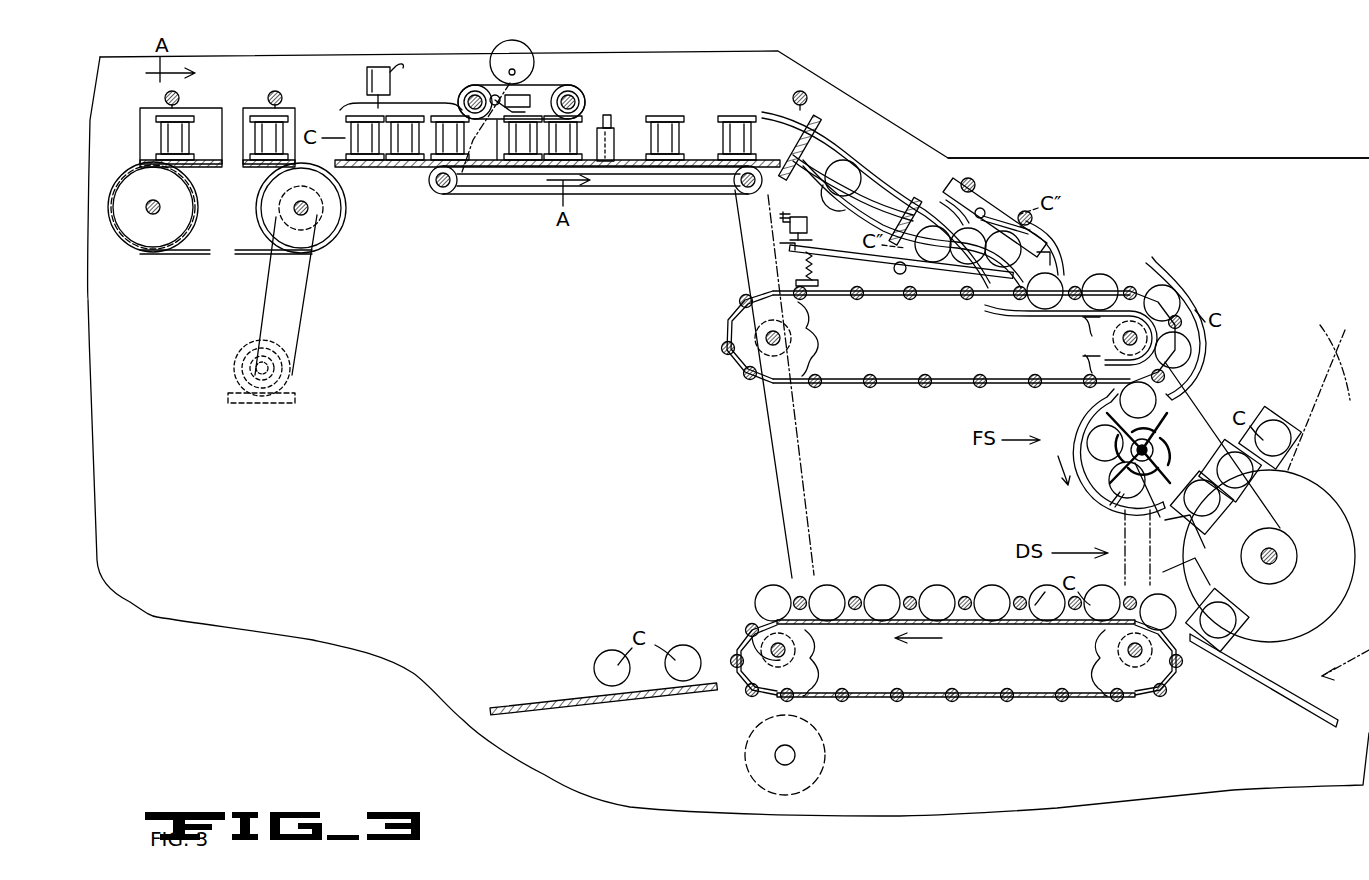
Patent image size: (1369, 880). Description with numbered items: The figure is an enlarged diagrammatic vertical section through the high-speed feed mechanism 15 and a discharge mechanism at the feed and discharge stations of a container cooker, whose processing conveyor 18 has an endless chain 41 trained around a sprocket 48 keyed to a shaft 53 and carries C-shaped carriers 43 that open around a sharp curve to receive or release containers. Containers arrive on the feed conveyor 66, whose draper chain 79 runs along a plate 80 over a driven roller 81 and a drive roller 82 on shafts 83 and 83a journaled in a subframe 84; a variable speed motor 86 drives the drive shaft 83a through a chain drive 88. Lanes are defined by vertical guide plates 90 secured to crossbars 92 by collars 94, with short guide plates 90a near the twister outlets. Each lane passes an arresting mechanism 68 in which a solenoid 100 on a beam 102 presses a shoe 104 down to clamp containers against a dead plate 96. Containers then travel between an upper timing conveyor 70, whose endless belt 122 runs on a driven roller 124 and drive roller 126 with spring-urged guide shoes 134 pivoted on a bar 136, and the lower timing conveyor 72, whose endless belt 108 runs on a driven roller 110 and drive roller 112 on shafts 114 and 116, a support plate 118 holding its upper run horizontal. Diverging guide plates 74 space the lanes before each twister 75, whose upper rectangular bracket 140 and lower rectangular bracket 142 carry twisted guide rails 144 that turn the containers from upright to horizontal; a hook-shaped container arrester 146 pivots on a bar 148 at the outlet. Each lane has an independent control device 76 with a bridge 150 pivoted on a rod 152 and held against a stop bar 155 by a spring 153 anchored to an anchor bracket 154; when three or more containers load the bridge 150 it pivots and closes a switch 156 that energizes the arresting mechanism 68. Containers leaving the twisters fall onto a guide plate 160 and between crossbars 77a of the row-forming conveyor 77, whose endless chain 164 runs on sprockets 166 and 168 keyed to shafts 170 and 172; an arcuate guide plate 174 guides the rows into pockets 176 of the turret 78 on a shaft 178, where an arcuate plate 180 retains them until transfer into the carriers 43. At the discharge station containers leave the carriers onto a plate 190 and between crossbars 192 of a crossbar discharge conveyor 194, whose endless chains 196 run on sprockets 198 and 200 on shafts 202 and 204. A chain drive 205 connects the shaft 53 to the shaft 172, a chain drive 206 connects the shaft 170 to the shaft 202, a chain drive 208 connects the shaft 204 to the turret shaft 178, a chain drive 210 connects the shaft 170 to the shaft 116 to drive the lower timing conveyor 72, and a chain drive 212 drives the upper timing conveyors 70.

The high-speed feed mechanism 15 is at (1182, 165).
The processing conveyor 18 is at (1332, 340).
The endless chain 41 is at (1279, 686).
The carrier bars 43 is at (1252, 483).
The sprocket 48 is at (1350, 595).
The shaft 53 is at (1277, 552).
The feed conveyor 66 is at (120, 162).
The arresting mechanism 68 is at (362, 95).
The upper timing conveyor 70 is at (513, 80).
The lower timing conveyor 72 is at (497, 208).
The diverging guide plates 74 is at (695, 128).
The twister 75 is at (892, 194).
The independent control device 76 is at (923, 332).
The row-forming conveyor 77 is at (713, 305).
The crossbars 77a is at (910, 380).
The pocketed turret 78 is at (1115, 456).
The draper chain 79 is at (240, 273).
The plate 80 is at (250, 183).
The driven roller 81 is at (195, 217).
The drive roller 82 is at (343, 218).
The shaft 83 is at (160, 207).
The drive shaft 83a is at (308, 208).
The subframe 84 is at (500, 371).
The variable speed motor 86 is at (290, 370).
The chain drive 88 is at (300, 292).
The vertical guide plates 90 is at (140, 122).
The short guide plates 90a is at (968, 178).
The crossbars 92 is at (268, 98).
The collars 94 is at (180, 98).
The dead plate 96 is at (375, 167).
The solenoid 100 is at (378, 66).
The beam 102 is at (366, 70).
The shoe 104 is at (352, 110).
The endless belt 108 is at (530, 198).
The driven roller 110 is at (465, 198).
The drive roller 112 is at (738, 195).
The shaft 114 is at (460, 180).
The shaft 116 is at (735, 180).
The support plate 118 is at (634, 174).
The endless belts 122 is at (582, 97).
The driven roller 124 is at (590, 118).
The drive roller 126 is at (458, 100).
The spring urged guide shoes 134 is at (530, 102).
The bar 136 is at (512, 100).
The upper rectangular bracket 140 is at (822, 135).
The lower rectangular bracket 142 is at (875, 205).
The guide rails 144 is at (862, 182).
The hook-shaped container arrester 146 is at (1062, 270).
The bar 148 is at (980, 208).
The bridge 150 is at (975, 298).
The rod 152 is at (893, 268).
The spring 153 is at (800, 264).
The anchor bracket 154 is at (796, 280).
The stop bar 155 is at (785, 243).
The switch 156 is at (807, 226).
The guide plate 160 is at (1005, 322).
The endless chain 164 is at (738, 372).
The sprockets 166 is at (730, 358).
The sprockets 168 is at (1085, 330).
The shaft 170 is at (766, 339).
The shaft 172 is at (1122, 339).
The arcuate guide plate 174 is at (1168, 270).
The pockets 176 is at (1155, 440).
The shaft 178 is at (1115, 507).
The arcuate plate 180 is at (1090, 480).
The plate 190 is at (928, 658).
The crossbars 192 is at (1008, 597).
The crossbar discharge conveyor 194 is at (739, 614).
The endless chains 196 is at (1052, 705).
The sprockets 198 is at (822, 650).
The sprockets 200 is at (1092, 670).
The shaft 202 is at (755, 692).
The shaft 204 is at (1127, 650).
The chain drive 205 is at (1195, 395).
The chain drive 206 is at (760, 472).
The chain drive 208 is at (1120, 526).
The chain drive 210 is at (740, 228).
The chain drive 212 is at (478, 74).